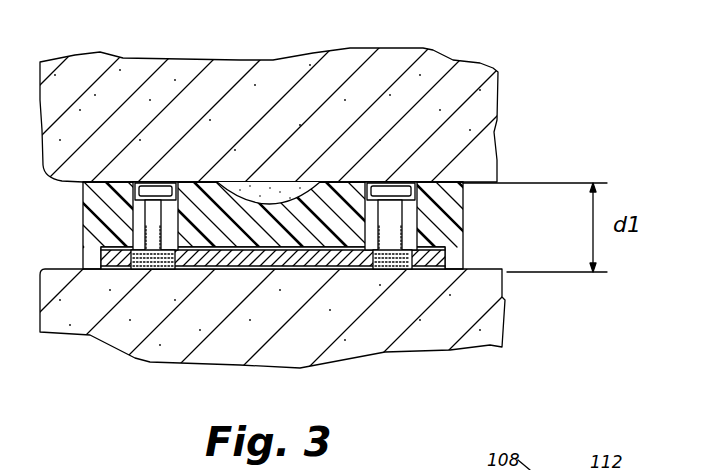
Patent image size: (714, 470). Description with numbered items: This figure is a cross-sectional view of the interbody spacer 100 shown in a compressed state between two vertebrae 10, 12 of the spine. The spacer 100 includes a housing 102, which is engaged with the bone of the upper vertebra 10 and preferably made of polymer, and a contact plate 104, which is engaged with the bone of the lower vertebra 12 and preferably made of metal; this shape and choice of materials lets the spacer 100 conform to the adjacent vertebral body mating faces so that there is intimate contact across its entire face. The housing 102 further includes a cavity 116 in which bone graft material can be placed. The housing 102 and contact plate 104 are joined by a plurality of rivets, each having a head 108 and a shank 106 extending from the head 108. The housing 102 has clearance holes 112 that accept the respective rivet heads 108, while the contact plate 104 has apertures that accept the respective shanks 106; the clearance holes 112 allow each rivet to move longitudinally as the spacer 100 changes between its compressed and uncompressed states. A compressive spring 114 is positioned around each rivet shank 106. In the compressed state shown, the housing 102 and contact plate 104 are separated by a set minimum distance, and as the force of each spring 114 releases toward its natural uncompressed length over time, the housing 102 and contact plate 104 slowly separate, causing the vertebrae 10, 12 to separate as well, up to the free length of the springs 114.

The vertebra 10 is at (500, 88).
The vertebra 12 is at (483, 327).
The spacer 100 is at (274, 221).
The housing 102 is at (458, 231).
The contact plate 104 is at (190, 269).
The shank 106 is at (83, 228).
The head 108 is at (160, 182).
The clearance hole 112 is at (83, 183).
The compressive spring 114 is at (134, 269).
The cavity 116 is at (266, 190).